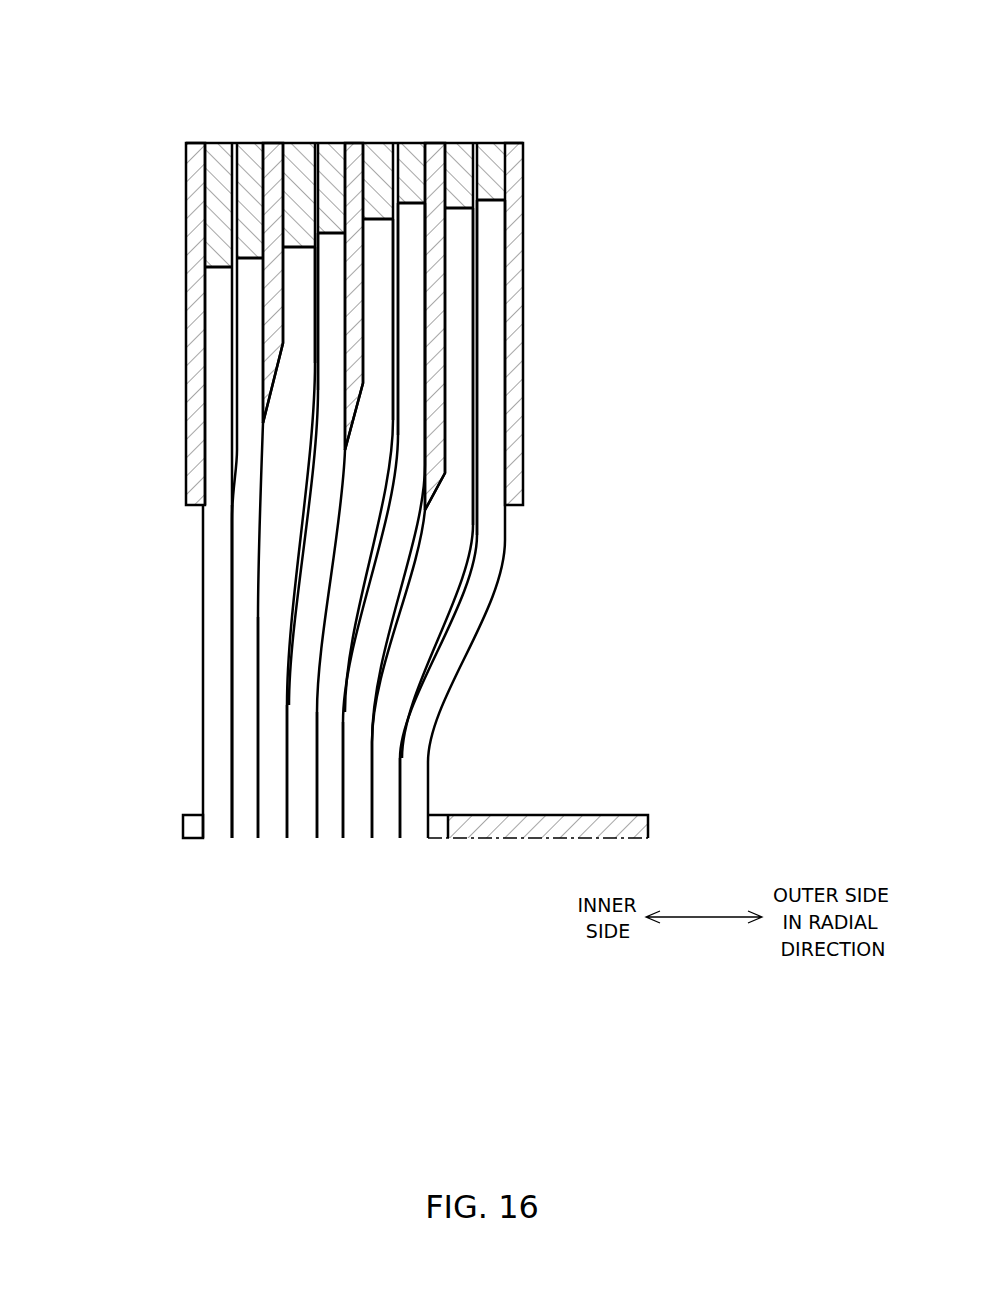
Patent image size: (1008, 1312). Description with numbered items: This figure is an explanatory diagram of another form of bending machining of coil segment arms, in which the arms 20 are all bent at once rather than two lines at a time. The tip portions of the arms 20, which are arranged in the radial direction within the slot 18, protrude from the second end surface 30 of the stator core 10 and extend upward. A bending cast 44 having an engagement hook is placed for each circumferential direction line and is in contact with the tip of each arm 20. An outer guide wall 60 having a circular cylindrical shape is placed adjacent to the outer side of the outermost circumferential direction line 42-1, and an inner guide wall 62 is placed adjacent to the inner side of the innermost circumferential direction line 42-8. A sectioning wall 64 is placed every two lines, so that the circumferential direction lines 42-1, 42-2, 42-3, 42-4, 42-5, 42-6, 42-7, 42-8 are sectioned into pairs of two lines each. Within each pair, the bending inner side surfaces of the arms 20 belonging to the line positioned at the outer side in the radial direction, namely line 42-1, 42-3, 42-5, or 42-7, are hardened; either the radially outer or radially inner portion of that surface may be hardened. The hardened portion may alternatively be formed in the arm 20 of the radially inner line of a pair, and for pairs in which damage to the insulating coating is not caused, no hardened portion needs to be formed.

The stator core 10 is at (540, 815).
The slot 18 is at (183, 827).
The arm 20 is at (400, 542).
The second end surface 30 is at (485, 815).
The circumferential direction line 42-1 is at (415, 843).
The circumferential direction line 42-2 is at (388, 843).
The circumferential direction line 42-3 is at (358, 843).
The circumferential direction line 42-4 is at (327, 843).
The circumferential direction line 42-5 is at (303, 843).
The circumferential direction line 42-6 is at (272, 843).
The circumferential direction line 42-7 is at (245, 843).
The circumferential direction line 42-8 is at (213, 843).
The bending cast 44 is at (412, 160).
The outer guide wall 60 is at (520, 262).
The inner guide wall 62 is at (195, 345).
The sectioning wall 64 is at (272, 290).